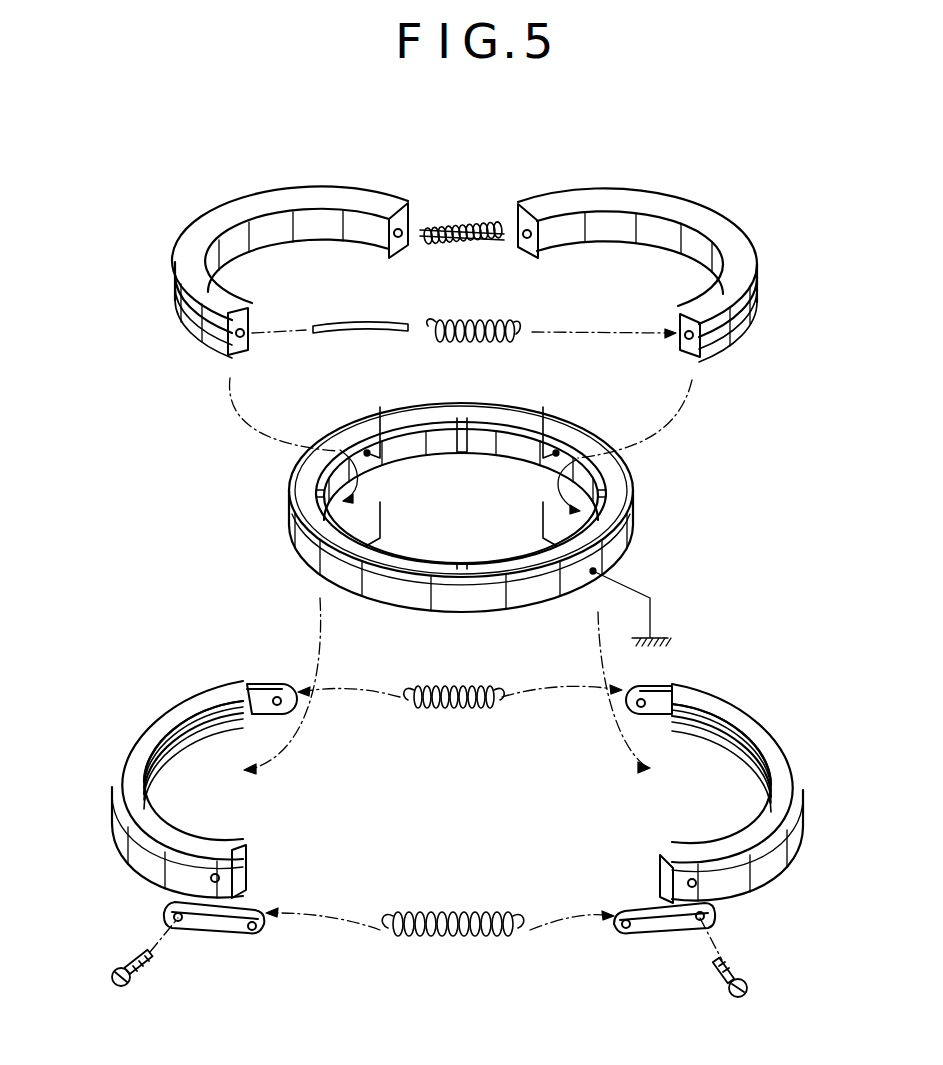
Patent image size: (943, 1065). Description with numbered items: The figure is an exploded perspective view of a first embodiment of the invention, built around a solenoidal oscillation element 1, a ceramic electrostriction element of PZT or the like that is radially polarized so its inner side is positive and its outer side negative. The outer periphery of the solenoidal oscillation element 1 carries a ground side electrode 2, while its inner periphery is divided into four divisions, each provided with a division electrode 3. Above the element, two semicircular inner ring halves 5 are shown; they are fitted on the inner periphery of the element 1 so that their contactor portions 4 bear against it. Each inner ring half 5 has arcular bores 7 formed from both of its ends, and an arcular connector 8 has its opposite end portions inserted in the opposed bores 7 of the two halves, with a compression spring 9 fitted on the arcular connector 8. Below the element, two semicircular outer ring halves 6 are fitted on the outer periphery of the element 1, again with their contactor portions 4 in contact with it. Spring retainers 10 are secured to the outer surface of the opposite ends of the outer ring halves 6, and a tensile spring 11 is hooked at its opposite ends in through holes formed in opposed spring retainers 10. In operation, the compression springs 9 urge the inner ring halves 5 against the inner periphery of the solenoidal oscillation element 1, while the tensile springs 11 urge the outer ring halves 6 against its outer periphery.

The solenoidal oscillation element 1 is at (625, 505).
The ground side electrode 2 is at (633, 532).
The division electrodes 3 is at (480, 423).
The contactor portions 4 is at (760, 297).
The inner ring halves 5 is at (198, 232).
The outer ring halves 6 is at (148, 724).
The arcular bores 7 is at (402, 228).
The arcular connector 8 is at (497, 226).
The compression spring 9 is at (455, 224).
The spring retainers 10 is at (262, 684).
The tensile spring 11 is at (457, 710).